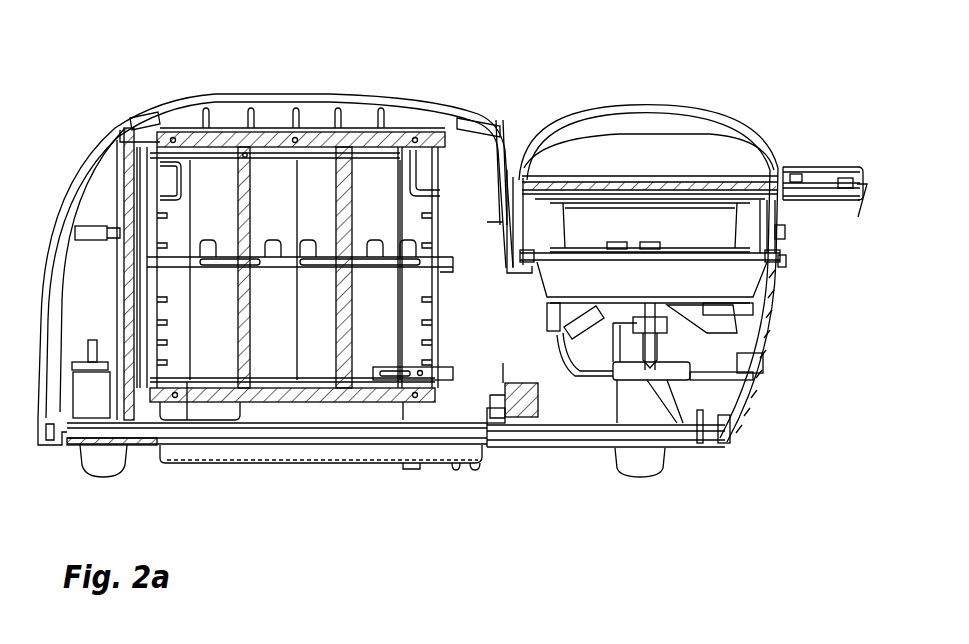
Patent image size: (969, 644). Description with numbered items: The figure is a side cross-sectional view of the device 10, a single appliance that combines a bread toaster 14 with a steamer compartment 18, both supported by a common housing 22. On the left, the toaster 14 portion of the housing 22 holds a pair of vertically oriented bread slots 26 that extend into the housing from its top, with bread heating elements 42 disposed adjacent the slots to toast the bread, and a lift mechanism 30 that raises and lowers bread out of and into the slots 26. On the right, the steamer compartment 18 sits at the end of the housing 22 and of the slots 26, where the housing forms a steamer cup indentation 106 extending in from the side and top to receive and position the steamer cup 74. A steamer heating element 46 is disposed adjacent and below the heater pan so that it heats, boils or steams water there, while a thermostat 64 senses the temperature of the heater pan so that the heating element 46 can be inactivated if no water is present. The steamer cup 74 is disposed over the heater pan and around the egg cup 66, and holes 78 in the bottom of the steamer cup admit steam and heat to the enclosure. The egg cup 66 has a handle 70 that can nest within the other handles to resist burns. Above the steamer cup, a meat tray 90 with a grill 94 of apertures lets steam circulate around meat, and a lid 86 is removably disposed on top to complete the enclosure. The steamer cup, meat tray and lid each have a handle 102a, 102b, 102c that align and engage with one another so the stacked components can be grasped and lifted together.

The device 10 is at (403, 490).
The bread toaster 14 is at (404, 96).
The steamer compartment 18 is at (790, 358).
The housing 22 is at (43, 240).
The bread slots 26 is at (237, 110).
The lift mechanism 30 is at (315, 303).
The bread heating elements 42 is at (243, 327).
The steamer heating element 46 is at (622, 305).
The thermostat 64 is at (693, 310).
The egg cup 66 is at (583, 243).
The handle 70 is at (770, 203).
The steamer cup 74 is at (784, 262).
The holes 78 is at (582, 258).
The lid 86 is at (563, 117).
The meat tray 90 is at (567, 197).
The grill 94 is at (672, 188).
The handle of steamer cup 102a is at (783, 248).
The handle of meat tray 102b is at (813, 200).
The handle of lid 102c is at (810, 165).
The steamer cup indentation 106 is at (487, 222).